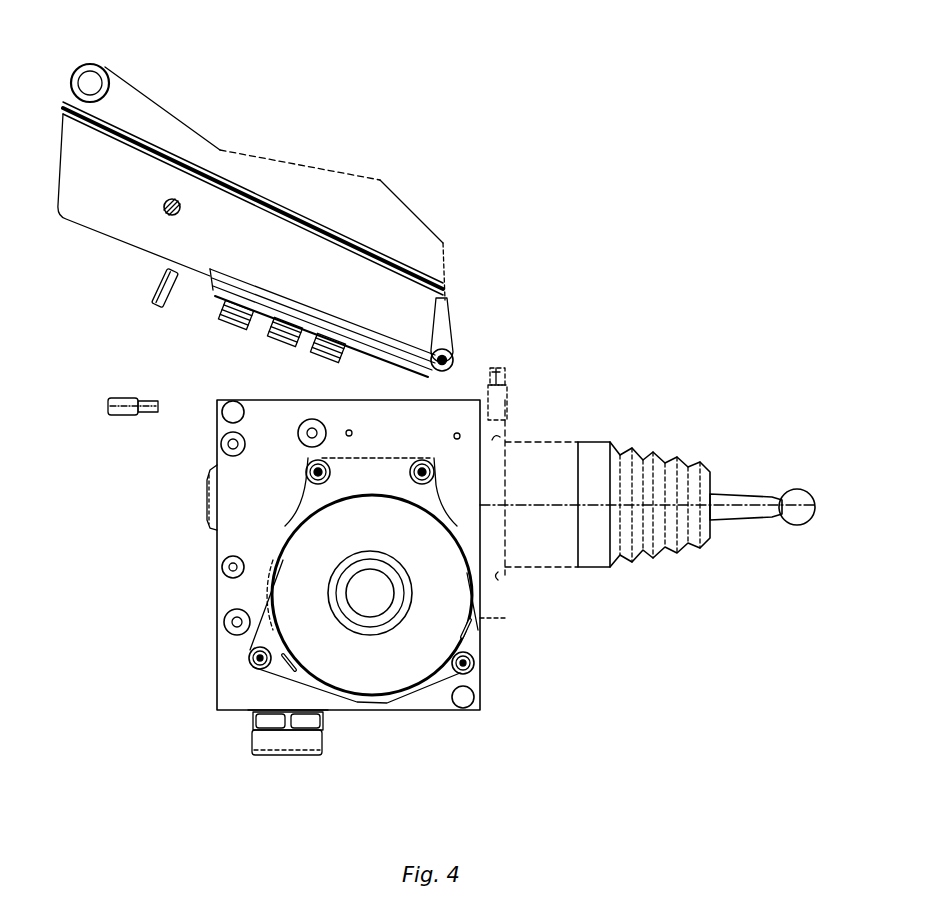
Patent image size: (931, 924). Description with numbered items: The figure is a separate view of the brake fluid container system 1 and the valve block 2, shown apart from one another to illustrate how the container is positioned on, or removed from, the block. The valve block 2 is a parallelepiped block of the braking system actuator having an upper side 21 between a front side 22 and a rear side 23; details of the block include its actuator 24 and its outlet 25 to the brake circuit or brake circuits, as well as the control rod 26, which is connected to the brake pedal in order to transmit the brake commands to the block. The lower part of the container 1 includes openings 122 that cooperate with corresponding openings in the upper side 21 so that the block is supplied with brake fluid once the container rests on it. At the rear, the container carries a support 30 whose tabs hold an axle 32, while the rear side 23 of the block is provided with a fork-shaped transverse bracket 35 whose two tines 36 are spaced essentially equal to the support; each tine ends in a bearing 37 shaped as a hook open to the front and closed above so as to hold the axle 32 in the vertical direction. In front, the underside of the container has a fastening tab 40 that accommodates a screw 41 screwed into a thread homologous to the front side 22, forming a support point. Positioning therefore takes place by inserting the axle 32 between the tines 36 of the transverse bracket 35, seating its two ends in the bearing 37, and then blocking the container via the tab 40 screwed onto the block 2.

The brake fluid container system 1 is at (174, 80).
The valve block 2 is at (180, 557).
The upper side 21 is at (254, 388).
The front side 22 is at (215, 647).
The rear side 23 is at (481, 640).
The actuator 24 is at (384, 680).
The outlet 25 is at (285, 745).
The control rod 26 is at (765, 503).
The support 30 is at (460, 308).
The axle 32 is at (452, 357).
The transverse bracket 35 is at (490, 597).
The tines 36 is at (495, 408).
The bearing 37 is at (492, 387).
The fastening tab 40 is at (153, 291).
The screw 41 is at (118, 414).
The openings 122 is at (300, 353).